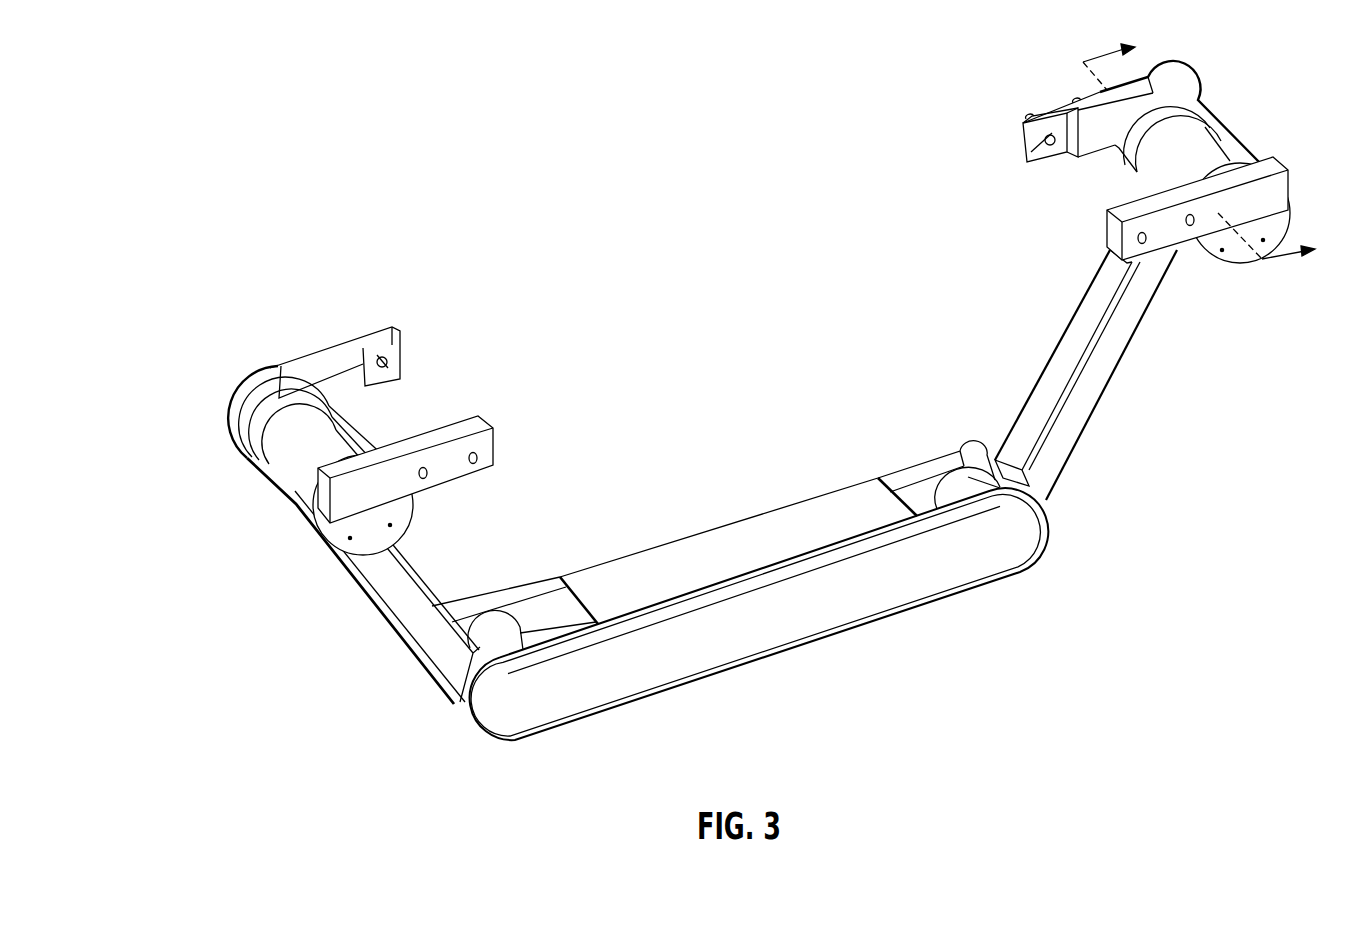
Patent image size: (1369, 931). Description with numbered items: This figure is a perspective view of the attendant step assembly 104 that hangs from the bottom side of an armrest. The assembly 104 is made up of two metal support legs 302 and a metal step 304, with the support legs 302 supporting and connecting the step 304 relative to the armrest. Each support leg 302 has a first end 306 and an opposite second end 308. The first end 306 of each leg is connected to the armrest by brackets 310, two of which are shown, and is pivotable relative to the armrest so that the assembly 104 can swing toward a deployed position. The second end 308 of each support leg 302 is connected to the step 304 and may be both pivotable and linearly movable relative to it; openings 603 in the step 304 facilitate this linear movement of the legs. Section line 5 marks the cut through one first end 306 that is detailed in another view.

The attendant step assembly 104 is at (526, 262).
The support leg 302 is at (410, 610).
The step 304 is at (790, 626).
The first end 306 is at (283, 402).
The second end 308 is at (460, 705).
The bracket 310 is at (240, 417).
The opening 603 is at (543, 608).
The section line 5- 5 is at (1211, 148).